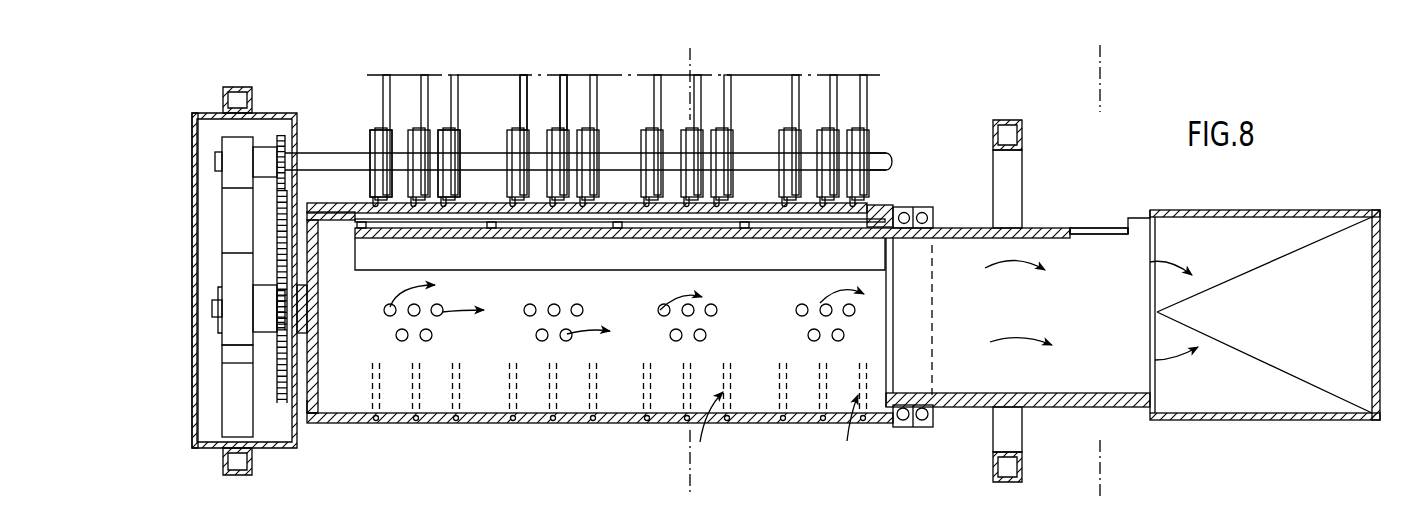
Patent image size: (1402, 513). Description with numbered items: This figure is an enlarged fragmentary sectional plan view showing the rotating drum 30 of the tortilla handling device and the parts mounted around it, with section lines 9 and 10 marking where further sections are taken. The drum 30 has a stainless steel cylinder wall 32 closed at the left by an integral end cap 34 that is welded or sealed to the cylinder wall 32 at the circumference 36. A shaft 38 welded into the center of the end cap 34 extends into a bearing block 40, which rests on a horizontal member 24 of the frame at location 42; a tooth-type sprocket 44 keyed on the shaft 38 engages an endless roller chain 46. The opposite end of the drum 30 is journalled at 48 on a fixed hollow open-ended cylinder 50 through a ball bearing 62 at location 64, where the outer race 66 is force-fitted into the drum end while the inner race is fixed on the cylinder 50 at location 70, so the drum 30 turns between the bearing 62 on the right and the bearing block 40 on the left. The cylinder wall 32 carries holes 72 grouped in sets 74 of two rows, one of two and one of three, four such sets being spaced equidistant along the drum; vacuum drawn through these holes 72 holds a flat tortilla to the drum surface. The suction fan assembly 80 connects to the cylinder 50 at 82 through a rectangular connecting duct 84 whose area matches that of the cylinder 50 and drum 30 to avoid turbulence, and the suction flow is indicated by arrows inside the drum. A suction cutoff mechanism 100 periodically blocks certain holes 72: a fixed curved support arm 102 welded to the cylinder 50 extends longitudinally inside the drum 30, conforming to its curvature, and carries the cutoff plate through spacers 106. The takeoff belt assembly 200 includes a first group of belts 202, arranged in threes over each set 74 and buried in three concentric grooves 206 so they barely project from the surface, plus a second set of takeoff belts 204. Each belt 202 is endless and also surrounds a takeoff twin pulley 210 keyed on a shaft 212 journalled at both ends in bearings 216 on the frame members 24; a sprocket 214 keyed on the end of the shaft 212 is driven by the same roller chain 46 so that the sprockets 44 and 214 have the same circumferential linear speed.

The section line 9- 9 is at (660, 56).
The section line 10- 10 is at (1070, 57).
The horizontal members 24 is at (1018, 186).
The rotating drum 30 is at (899, 434).
The cylinder wall 32 is at (765, 424).
The end cap 34 is at (314, 346).
The circumference 36 is at (317, 424).
The shaft 38 is at (291, 301).
The bearing block 40 is at (233, 330).
The location 42 is at (222, 272).
The sprocket 44 is at (282, 405).
The roller chain 46 is at (240, 205).
The journal 48 is at (928, 207).
The fixed hollow open-ended cylinder 50 is at (1090, 225).
The ball bearing 62 is at (922, 407).
The location 64 is at (934, 215).
The outer race 66 is at (912, 205).
The location 70 is at (926, 233).
The holes 72 is at (430, 335).
The set of holes 74 is at (433, 303).
The suction fan assembly 80 is at (1245, 205).
The connection 82 is at (1134, 420).
The connecting duct 84 is at (1298, 210).
The suction cutoff mechanism 100 is at (667, 246).
The support arm 102 is at (520, 238).
The spacers 106 is at (490, 228).
The takeoff belt assembly 200 is at (878, 104).
The belts 202 is at (378, 130).
The takeoff belts 204 is at (568, 77).
The grooves 206 is at (373, 200).
The takeoff twin pulley 210 is at (372, 140).
The shaft 212 is at (884, 157).
The sprocket 214 is at (278, 133).
The bearing 216 is at (222, 138).